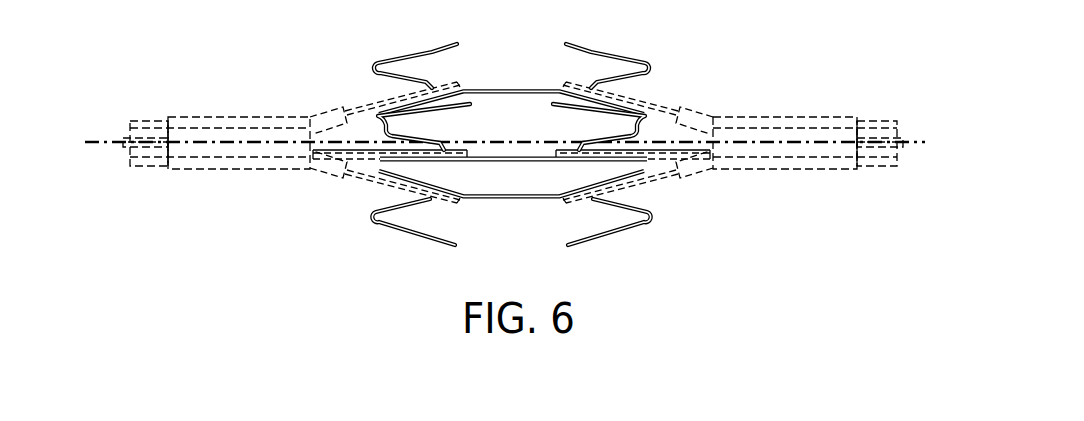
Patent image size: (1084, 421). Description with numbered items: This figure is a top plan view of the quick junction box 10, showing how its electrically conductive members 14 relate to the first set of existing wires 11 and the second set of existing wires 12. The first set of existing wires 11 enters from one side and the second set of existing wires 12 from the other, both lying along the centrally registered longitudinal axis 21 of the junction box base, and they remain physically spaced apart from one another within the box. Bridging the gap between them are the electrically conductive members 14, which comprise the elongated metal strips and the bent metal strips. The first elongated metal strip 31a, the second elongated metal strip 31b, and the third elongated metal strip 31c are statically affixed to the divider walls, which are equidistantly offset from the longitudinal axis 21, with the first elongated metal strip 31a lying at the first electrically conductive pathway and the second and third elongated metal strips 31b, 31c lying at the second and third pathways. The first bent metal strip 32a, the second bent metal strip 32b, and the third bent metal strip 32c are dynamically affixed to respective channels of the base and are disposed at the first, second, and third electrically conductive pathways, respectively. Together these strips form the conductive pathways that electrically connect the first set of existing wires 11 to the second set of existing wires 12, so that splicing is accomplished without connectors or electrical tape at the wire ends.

The quick junction box 10 is at (270, 223).
The first set of existing wires 11 is at (237, 128).
The second set of existing wires 12 is at (823, 117).
The electrically conductive members 14 is at (686, 54).
The centrally registered longitudinal axis 21 is at (95, 142).
The first elongated metal strip 31a is at (400, 110).
The second elongated metal strip 31b is at (633, 175).
The third elongated metal strip 31c is at (430, 157).
The first bent metal strip 32a is at (573, 45).
The second bent metal strip 32b is at (580, 240).
The third bent metal strip 32c is at (587, 113).